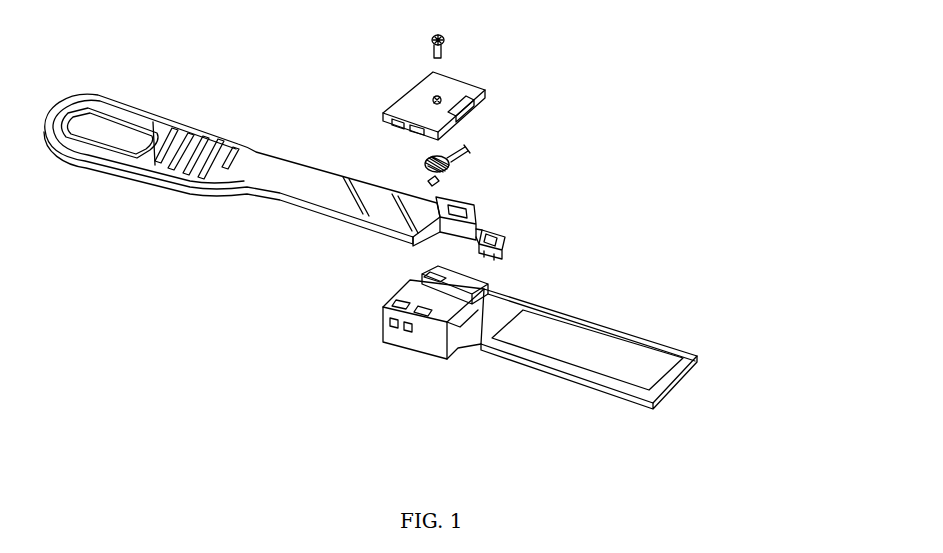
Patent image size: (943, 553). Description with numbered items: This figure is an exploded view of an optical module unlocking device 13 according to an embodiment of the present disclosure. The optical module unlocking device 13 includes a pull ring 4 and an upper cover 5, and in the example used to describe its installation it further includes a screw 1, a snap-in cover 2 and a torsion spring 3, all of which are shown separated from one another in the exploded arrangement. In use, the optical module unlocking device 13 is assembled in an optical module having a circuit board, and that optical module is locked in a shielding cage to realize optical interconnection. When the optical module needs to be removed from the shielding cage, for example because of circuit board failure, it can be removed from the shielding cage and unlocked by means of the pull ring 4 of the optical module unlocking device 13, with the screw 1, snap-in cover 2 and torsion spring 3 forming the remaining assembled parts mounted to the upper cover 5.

The screw 1 is at (454, 43).
The snap-in cover 2 is at (472, 117).
The torsion spring 3 is at (464, 171).
The pull ring 4 is at (502, 232).
The upper cover 5 is at (576, 308).
The optical module unlocking device 13 is at (720, 32).